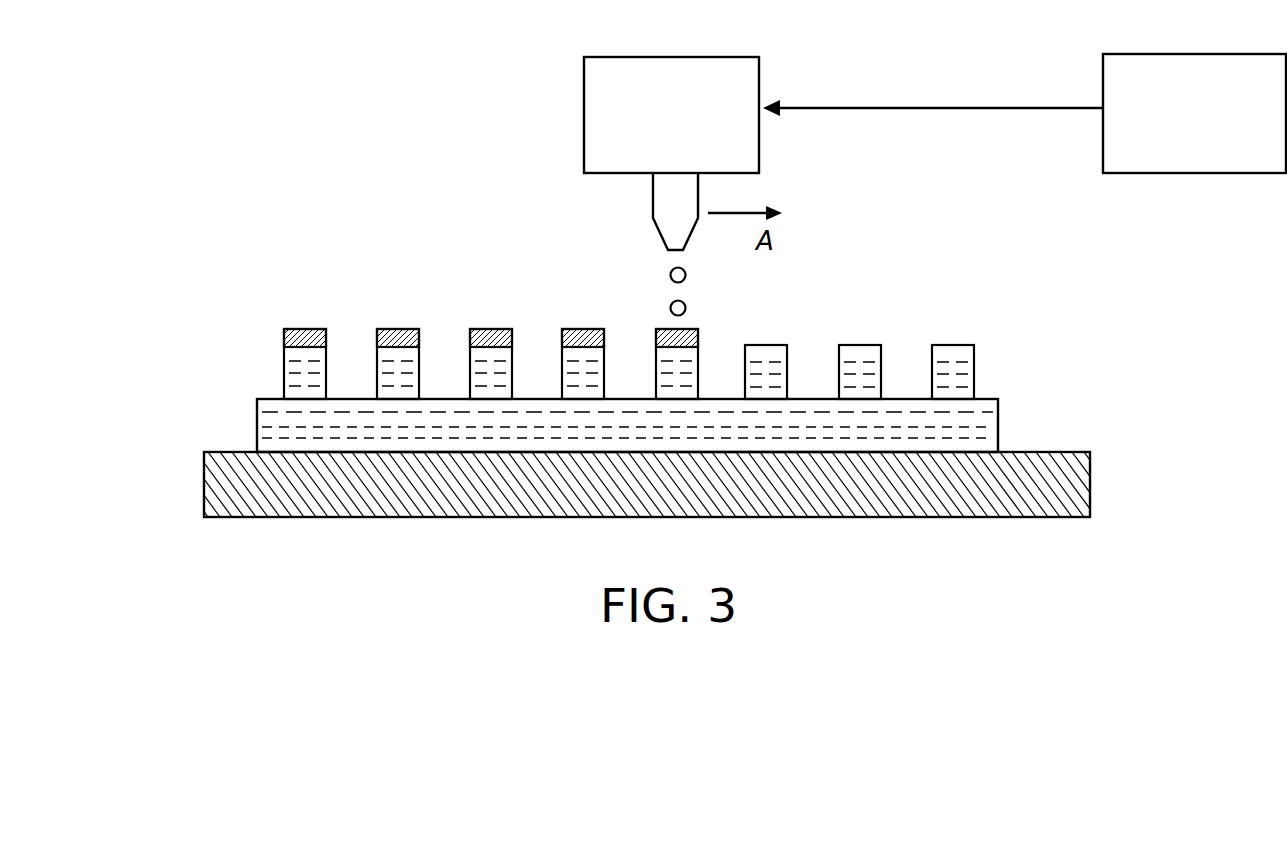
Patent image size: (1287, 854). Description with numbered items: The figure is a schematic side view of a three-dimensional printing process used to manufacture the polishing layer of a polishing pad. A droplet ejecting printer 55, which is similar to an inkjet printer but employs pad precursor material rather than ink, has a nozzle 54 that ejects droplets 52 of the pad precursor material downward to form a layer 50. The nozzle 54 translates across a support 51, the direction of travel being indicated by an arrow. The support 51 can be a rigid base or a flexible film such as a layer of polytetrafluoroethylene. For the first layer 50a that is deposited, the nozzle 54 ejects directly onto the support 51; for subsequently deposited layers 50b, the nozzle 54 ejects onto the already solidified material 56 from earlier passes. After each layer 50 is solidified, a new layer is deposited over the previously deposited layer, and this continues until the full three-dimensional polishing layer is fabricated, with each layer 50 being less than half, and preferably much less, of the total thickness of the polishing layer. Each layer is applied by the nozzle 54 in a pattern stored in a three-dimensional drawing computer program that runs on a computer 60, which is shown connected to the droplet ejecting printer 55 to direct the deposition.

The layer 50 is at (284, 337).
The first layer 50a is at (257, 447).
The subsequently deposited layers 50b is at (257, 433).
The support 51 is at (1090, 492).
The droplets 52 is at (670, 279).
The nozzle 54 is at (653, 202).
The droplet ejecting printer 55 is at (584, 108).
The already solidified material 56 is at (974, 370).
The computer 60 is at (1132, 173).